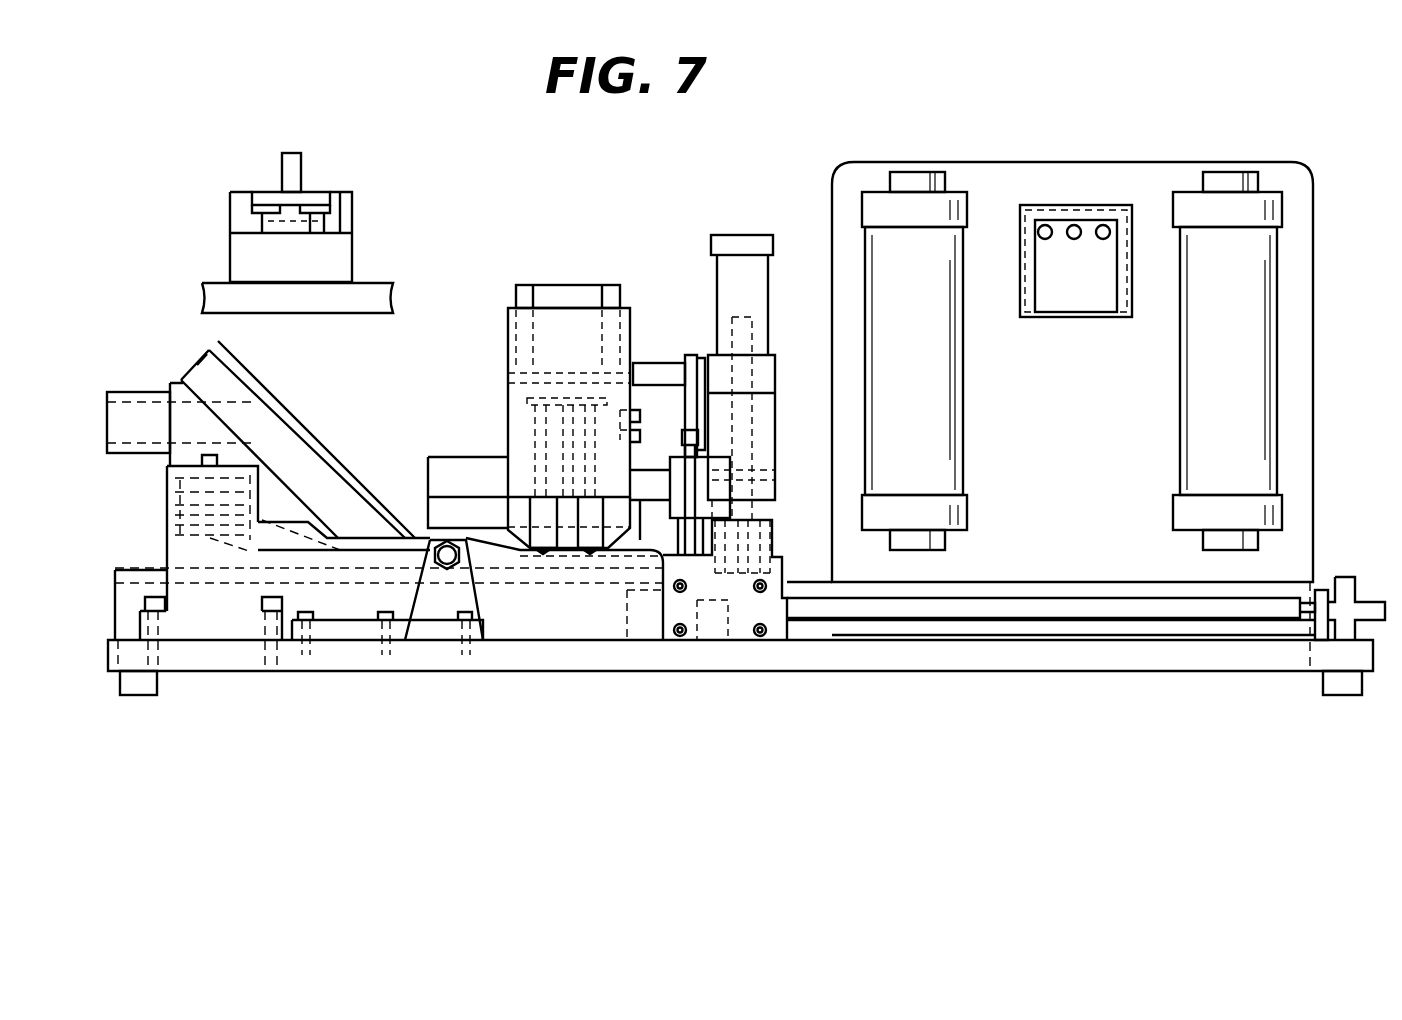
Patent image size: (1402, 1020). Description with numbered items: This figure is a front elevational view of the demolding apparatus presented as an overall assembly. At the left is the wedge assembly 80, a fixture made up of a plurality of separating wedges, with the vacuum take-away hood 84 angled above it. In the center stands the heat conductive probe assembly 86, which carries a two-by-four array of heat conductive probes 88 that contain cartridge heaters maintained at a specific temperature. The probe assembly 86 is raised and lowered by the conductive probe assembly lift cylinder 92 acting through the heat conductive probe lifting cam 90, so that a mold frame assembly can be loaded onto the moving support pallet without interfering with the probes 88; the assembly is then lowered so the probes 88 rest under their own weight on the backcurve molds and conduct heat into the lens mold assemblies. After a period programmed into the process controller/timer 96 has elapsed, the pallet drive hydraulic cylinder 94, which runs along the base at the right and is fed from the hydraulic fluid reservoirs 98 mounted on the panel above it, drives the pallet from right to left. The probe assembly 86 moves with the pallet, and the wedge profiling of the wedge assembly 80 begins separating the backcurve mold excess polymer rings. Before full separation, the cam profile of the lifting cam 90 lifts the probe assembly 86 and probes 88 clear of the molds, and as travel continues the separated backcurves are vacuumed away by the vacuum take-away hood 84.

The wedge assembly 80 is at (295, 522).
The vacuum take-away hood 84 is at (313, 434).
The heat conductive probe assembly 86 is at (650, 336).
The heat conductive probes 88 is at (590, 554).
The heat conductive probe lifting cam 90 is at (424, 468).
The conductive probe assembly lift cylinder 92 is at (738, 395).
The pallet drive hydraulic cylinder 94 is at (1027, 610).
The process controller/timer 96 is at (1067, 203).
The hydraulic fluid reservoirs 98 is at (1180, 355).